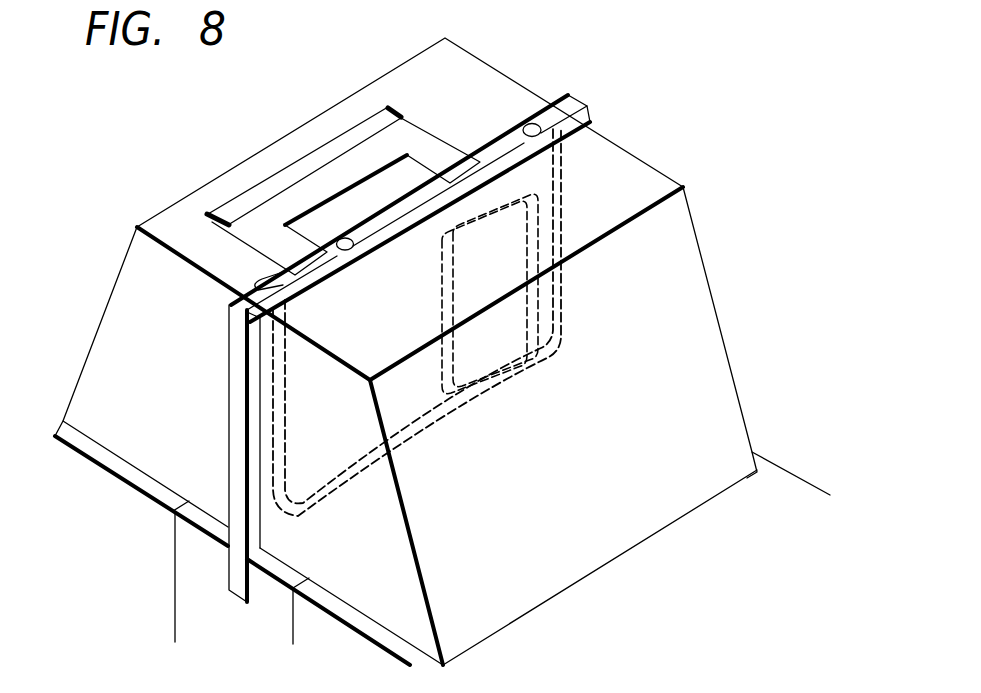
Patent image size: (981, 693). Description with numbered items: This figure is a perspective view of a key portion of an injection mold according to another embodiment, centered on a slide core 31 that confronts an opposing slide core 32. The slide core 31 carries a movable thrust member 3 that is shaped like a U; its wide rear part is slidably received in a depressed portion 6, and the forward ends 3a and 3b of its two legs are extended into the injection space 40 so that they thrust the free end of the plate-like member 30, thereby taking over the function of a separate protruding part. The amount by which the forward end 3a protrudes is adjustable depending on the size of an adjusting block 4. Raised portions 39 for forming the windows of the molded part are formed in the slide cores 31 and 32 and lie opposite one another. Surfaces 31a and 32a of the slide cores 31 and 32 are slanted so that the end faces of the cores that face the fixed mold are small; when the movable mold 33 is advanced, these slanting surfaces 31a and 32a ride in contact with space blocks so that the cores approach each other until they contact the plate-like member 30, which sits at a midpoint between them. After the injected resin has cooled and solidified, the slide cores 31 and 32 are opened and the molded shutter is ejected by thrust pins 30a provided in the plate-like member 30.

The thrust member 3 is at (344, 144).
The forward end 3a is at (452, 178).
The forward end 3b is at (303, 260).
The adjusting block 4 is at (367, 132).
The depressed portion 6 is at (207, 216).
The plate-like member 30 is at (569, 95).
The thrust pins 30a is at (532, 123).
The slide core 31 is at (477, 69).
The slanted surface 31a is at (101, 289).
The slide core 32 is at (637, 178).
The slanted surface 32a is at (693, 285).
The movable mold 33 is at (182, 530).
The raised portions 39 is at (518, 334).
The injection space 40 is at (364, 213).